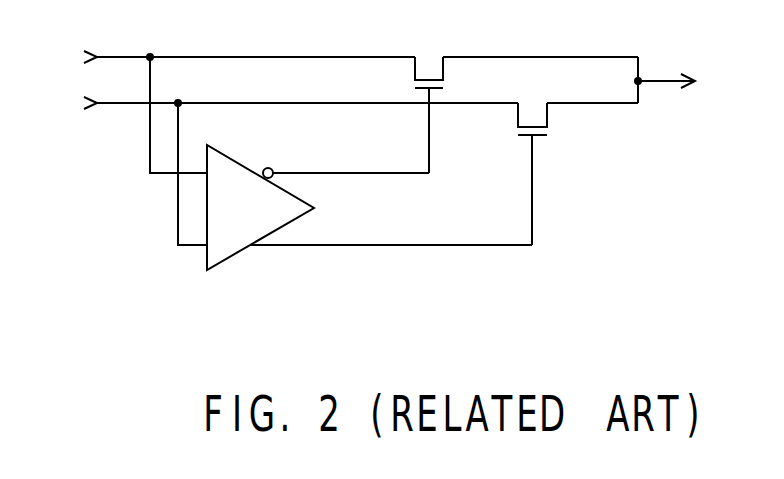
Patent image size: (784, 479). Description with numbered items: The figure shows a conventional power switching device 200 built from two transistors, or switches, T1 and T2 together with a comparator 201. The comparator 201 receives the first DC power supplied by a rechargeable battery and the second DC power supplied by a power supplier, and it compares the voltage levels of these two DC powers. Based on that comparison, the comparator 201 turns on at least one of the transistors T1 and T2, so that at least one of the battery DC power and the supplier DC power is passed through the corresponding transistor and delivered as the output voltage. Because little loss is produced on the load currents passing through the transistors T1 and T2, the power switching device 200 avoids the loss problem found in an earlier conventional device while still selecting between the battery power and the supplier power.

The power switching device 200 is at (403, 184).
The comparator 201 is at (230, 258).
The transistor T1 is at (429, 98).
The transistor T2 is at (532, 157).